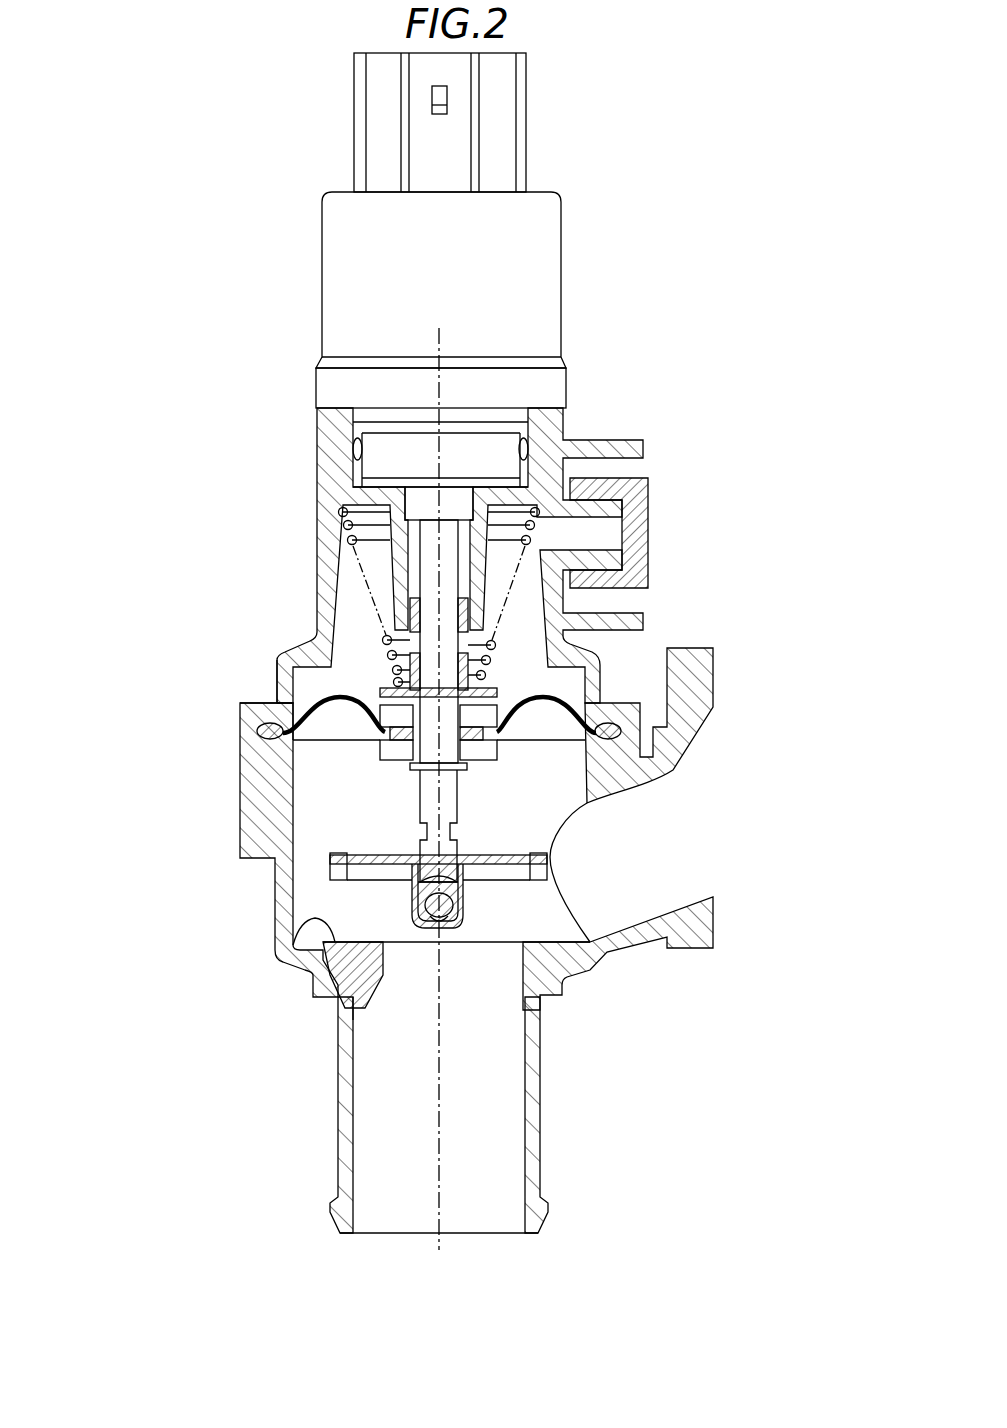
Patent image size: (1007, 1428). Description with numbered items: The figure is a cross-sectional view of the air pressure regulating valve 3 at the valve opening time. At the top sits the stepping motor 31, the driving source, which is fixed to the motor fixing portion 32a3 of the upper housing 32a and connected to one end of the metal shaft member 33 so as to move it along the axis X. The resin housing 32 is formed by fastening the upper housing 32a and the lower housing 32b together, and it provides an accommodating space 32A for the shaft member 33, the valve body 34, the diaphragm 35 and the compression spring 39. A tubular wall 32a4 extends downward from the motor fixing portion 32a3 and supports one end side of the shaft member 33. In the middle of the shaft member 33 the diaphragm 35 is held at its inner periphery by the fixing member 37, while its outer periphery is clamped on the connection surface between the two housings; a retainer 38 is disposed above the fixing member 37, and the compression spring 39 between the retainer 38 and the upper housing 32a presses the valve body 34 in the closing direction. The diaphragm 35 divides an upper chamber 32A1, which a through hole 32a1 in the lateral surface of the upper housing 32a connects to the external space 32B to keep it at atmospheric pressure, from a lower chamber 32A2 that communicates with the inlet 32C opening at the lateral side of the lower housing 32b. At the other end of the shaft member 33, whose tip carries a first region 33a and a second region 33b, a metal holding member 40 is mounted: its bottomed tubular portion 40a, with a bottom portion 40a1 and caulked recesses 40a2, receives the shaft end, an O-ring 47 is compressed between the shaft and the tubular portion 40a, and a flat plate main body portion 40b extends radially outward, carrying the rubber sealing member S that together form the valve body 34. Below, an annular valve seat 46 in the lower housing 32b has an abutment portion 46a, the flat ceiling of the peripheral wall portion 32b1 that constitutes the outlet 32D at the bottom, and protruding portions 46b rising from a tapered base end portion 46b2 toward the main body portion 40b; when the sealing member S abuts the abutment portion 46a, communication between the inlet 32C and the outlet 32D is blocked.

The air pressure regulating valve 3 is at (446, 651).
The stepping motor 31 is at (330, 240).
The axis X is at (437, 775).
The housing 32 is at (446, 808).
The upper housing 32a is at (447, 543).
The through hole 32a1 is at (618, 542).
The motor fixing portion 32a3 is at (320, 425).
The tubular wall 32a4 is at (400, 580).
The accommodating space 32A is at (205, 732).
The upper chamber 32A1 is at (316, 685).
The lower chamber 32A2 is at (313, 804).
The external space 32B is at (574, 470).
The inlet 32C is at (690, 828).
The outlet 32D is at (436, 1115).
The lower housing 32b is at (466, 940).
The peripheral wall portion 32b1 is at (338, 1112).
The shaft member 33 is at (487, 784).
The first region 33a is at (478, 932).
The second region 33b is at (462, 908).
The valve body 34 is at (394, 848).
The diaphragm 35 is at (360, 727).
The fixing member 37 is at (380, 703).
The retainer 38 is at (385, 668).
The compression spring 39 is at (543, 537).
The holding member 40 is at (431, 1018).
The tubular portion 40a is at (465, 890).
The bottom portion 40a1 is at (448, 952).
The recesses 40a2 is at (412, 897).
The main body portion 40b is at (500, 855).
The valve seat 46 is at (380, 1002).
The abutment portion 46a is at (320, 918).
The protruding portion 46b is at (345, 975).
The base end portion 46b2 is at (358, 1012).
The O-ring 47 is at (447, 882).
The sealing member S is at (345, 855).